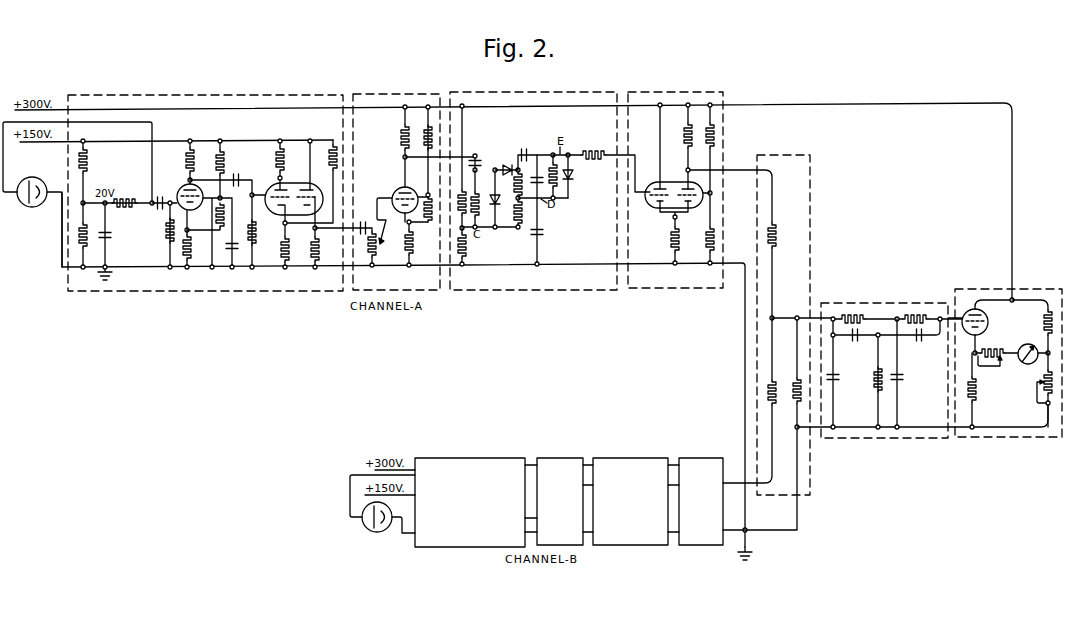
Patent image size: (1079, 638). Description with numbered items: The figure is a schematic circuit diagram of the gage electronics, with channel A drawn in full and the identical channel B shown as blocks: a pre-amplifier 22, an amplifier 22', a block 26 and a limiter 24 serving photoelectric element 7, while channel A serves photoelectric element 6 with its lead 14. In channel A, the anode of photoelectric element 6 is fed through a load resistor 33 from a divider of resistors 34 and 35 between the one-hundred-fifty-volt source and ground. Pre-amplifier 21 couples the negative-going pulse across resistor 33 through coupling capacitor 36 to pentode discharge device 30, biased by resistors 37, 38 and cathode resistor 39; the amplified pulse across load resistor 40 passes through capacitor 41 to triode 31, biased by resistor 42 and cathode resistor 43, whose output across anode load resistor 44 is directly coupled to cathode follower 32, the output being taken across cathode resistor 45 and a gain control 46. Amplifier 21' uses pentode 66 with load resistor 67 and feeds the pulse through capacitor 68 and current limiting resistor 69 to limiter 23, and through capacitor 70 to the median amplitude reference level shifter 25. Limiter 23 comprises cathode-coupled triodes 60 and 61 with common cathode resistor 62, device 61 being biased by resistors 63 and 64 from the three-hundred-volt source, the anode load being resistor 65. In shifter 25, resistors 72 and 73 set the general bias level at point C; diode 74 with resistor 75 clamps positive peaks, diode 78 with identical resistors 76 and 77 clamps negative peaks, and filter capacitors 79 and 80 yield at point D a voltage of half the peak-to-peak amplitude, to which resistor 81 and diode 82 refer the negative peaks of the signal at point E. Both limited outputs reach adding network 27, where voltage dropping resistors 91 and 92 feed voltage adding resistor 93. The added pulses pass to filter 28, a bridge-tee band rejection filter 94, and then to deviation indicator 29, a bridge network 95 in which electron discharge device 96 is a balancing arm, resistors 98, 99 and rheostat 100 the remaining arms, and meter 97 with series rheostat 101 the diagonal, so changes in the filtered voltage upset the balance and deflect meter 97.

The photoelectric element 6 is at (32, 177).
The photocell lead connection 14 is at (44, 207).
The photoelectric element 7 is at (377, 533).
The pre-amplifier 21 is at (205, 183).
The amplifier 21' is at (396, 183).
The pre-amplifier 22 is at (470, 492).
The amplifier 22' is at (554, 491).
The amplitude limiter 23 is at (680, 92).
The limiter 24 is at (703, 458).
The median amplitude reference level shifter 25 is at (533, 92).
The clipper network of channel B 26 is at (630, 458).
The adding network 27 is at (810, 181).
The filter 28 is at (880, 303).
The deviation indicator 29 is at (1033, 289).
The pentode discharge device 30 is at (185, 181).
The triode electron discharge device 31 is at (271, 188).
The cathode follower discharge device 32 is at (310, 189).
The load resistor 33 is at (125, 199).
The resistor 34 is at (88, 160).
The resistor 35 is at (88, 227).
The coupling capacitor 36 is at (158, 208).
The resistor 37 is at (224, 157).
The resistor 38 is at (219, 230).
The cathode resistor 39 is at (190, 247).
The load resistor 40 is at (186, 157).
The capacitor 41 is at (237, 177).
The resistor 42 is at (333, 142).
The cathode resistor 43 is at (288, 228).
The anode load resistor 44 is at (284, 163).
The cathode resistor 45 is at (318, 236).
The gain control potentiometer 46 is at (363, 224).
The discharge device 60 is at (655, 209).
The discharge device 61 is at (690, 209).
The common cathode resistor 62 is at (670, 245).
The resistor 63 is at (708, 128).
The resistor 64 is at (705, 245).
The plate load resistor 65 is at (683, 128).
The pentode discharge device 66 is at (398, 189).
The load resistor 67 is at (400, 135).
The capacitor 68 is at (523, 149).
The current limiting resistor 69 is at (595, 150).
The capacitor 70 is at (474, 154).
The resistor 72 is at (466, 191).
The resistor 73 is at (466, 248).
The diode 74 is at (502, 198).
The resistor 75 is at (480, 211).
The resistor 76 is at (514, 185).
The resistor 77 is at (514, 216).
The diode 78 is at (505, 165).
The filter capacitor 79 is at (537, 175).
The filter capacitor 80 is at (543, 233).
The resistor 81 is at (543, 177).
The diode 82 is at (572, 178).
The voltage dropping resistor 91 is at (778, 224).
The voltage dropping resistor 92 is at (776, 378).
The voltage adding resistor 93 is at (795, 413).
The narrow frequency band rejection filter 94 is at (903, 377).
The bridge network 95 is at (1018, 335).
The electron discharge device 96 is at (988, 313).
The meter 97 is at (1021, 364).
The resistor 98 is at (1046, 322).
The resistor 99 is at (977, 398).
The rheostat 100 is at (1036, 390).
The rheostat 101 is at (993, 351).